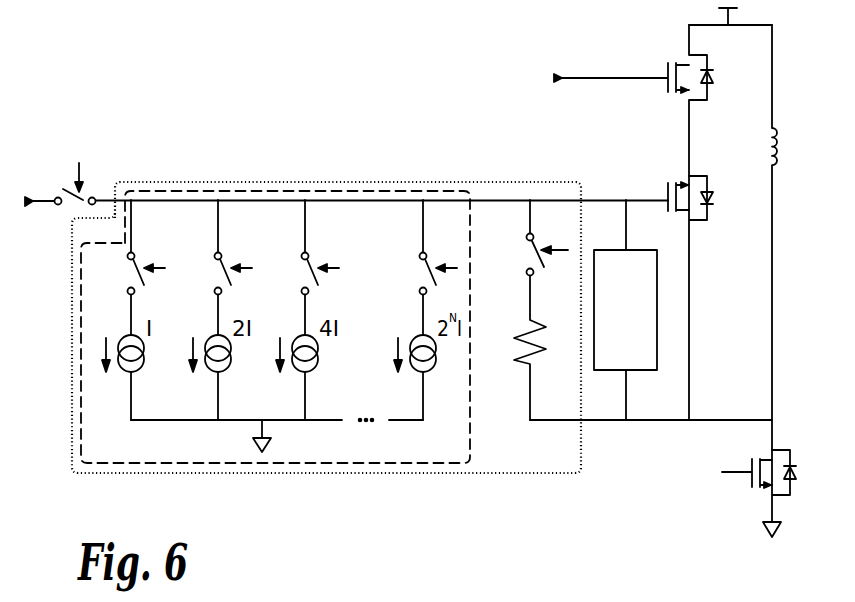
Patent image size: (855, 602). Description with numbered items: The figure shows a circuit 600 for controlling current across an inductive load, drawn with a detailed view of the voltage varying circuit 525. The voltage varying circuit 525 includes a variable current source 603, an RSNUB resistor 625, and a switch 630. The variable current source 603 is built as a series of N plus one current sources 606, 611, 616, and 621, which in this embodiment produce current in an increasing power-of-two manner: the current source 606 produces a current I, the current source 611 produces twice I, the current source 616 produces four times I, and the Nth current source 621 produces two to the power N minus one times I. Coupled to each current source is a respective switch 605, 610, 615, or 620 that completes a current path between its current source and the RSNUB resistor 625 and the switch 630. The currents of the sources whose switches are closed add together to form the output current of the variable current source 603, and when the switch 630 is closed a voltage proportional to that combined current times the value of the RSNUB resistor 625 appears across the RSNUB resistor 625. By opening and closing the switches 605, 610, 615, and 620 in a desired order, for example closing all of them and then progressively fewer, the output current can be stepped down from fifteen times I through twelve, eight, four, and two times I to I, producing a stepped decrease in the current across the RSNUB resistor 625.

The circuit 600 is at (158, 60).
The voltage varying circuit 525 is at (282, 182).
The variable current source 603 is at (384, 191).
The switch 605 is at (126, 271).
The switch 610 is at (213, 271).
The switch 615 is at (300, 271).
The switch 620 is at (418, 271).
The current source 606 is at (124, 372).
The current source 611 is at (211, 372).
The current source 616 is at (298, 372).
The current source 621 is at (416, 372).
The switch 630 is at (526, 251).
The RSNUB resistor 625 is at (512, 343).